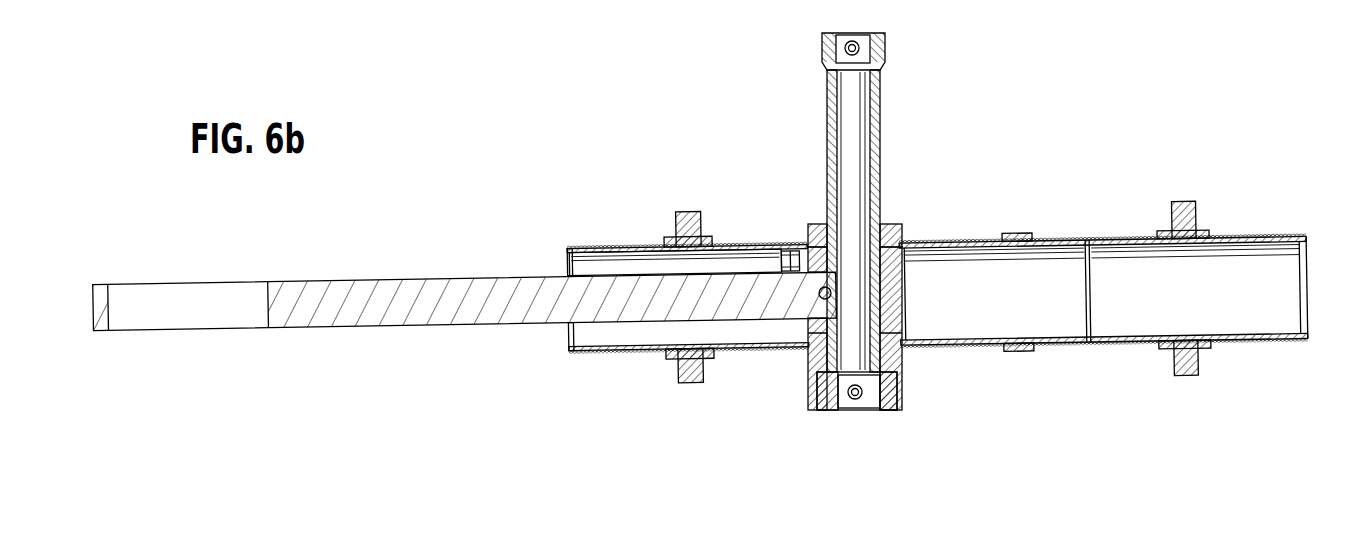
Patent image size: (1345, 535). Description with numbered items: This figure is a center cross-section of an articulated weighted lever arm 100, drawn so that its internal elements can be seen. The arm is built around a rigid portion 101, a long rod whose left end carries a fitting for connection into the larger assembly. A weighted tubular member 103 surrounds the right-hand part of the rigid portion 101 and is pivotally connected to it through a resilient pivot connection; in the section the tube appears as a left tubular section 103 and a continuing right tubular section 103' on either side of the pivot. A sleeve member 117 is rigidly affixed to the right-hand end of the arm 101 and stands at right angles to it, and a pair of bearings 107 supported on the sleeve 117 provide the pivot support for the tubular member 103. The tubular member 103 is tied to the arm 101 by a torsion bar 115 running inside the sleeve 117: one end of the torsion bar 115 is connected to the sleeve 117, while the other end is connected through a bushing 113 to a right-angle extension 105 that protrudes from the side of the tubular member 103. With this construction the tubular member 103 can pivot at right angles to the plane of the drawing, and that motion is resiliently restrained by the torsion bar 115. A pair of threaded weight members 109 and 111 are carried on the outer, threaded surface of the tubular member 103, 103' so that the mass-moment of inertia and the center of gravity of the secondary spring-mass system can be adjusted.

The actuator assembly 100 is at (432, 247).
The rigid portion 101 is at (423, 291).
The weighted tubular member 103 is at (688, 325).
The second housing tube 103' is at (1104, 312).
The right-angle extension 105 is at (808, 392).
The bearings 107 is at (822, 226).
The threaded weight member 109 is at (689, 383).
The threaded weight member 111 is at (1193, 363).
The bushing 113 is at (824, 400).
The torsion bar 115 is at (852, 193).
The sleeve member 117 is at (880, 123).